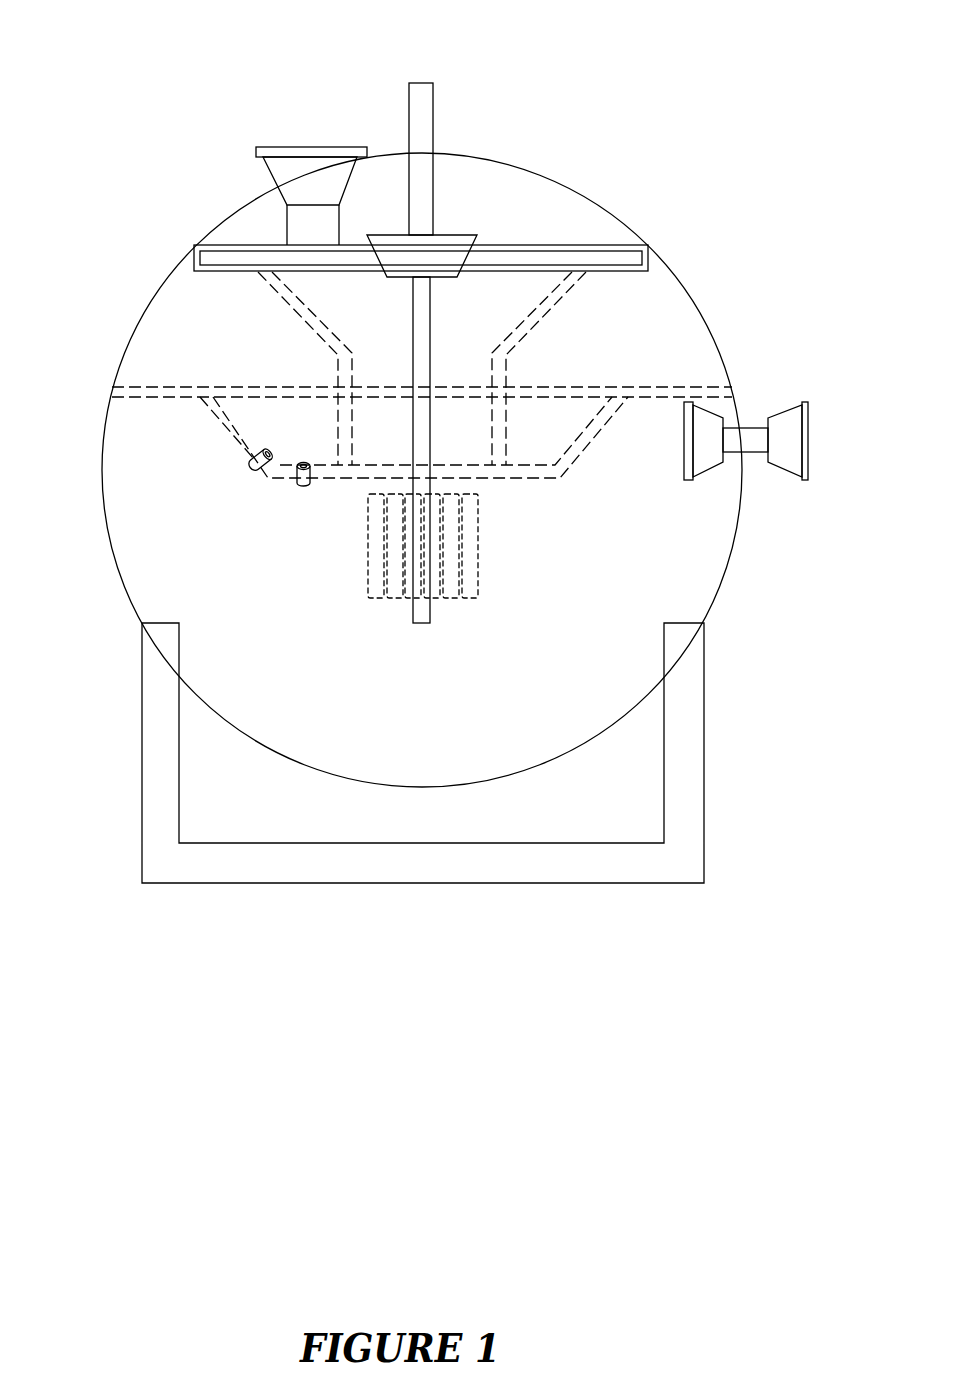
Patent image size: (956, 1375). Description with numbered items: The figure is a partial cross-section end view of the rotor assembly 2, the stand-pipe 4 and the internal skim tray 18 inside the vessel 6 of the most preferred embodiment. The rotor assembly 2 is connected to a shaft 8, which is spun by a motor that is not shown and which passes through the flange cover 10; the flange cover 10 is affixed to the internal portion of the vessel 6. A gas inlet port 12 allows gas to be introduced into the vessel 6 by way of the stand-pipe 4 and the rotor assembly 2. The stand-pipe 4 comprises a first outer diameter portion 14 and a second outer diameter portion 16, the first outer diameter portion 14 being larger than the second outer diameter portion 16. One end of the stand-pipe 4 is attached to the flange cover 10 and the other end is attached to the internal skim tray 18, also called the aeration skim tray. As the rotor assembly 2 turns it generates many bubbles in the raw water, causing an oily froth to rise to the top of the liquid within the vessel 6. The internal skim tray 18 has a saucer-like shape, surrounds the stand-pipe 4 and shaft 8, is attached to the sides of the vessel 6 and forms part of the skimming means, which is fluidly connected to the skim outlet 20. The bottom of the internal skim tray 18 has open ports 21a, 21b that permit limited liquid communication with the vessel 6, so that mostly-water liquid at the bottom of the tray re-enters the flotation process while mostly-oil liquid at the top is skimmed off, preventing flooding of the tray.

The rotor assembly 2 is at (482, 68).
The stand-pipe 4 is at (398, 389).
The vessel 6 is at (528, 172).
The shaft 8 is at (435, 141).
The flange cover 10 is at (587, 244).
The gas inlet port 12 is at (278, 147).
The first outer diameter portion 14 is at (570, 290).
The second outer diameter portion 16 is at (505, 377).
The internal skim tray 18 is at (325, 465).
The skim outlet 20 is at (740, 427).
The open port 21a is at (250, 462).
The open port 21b is at (294, 484).